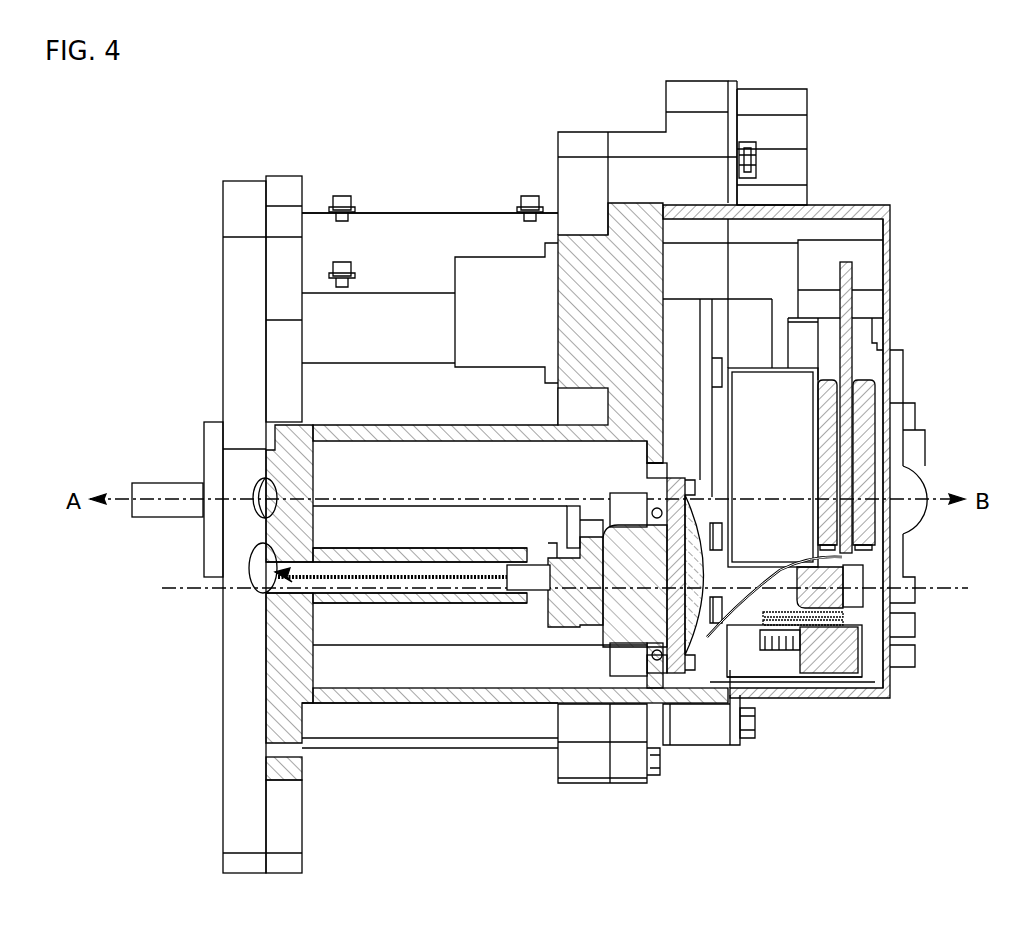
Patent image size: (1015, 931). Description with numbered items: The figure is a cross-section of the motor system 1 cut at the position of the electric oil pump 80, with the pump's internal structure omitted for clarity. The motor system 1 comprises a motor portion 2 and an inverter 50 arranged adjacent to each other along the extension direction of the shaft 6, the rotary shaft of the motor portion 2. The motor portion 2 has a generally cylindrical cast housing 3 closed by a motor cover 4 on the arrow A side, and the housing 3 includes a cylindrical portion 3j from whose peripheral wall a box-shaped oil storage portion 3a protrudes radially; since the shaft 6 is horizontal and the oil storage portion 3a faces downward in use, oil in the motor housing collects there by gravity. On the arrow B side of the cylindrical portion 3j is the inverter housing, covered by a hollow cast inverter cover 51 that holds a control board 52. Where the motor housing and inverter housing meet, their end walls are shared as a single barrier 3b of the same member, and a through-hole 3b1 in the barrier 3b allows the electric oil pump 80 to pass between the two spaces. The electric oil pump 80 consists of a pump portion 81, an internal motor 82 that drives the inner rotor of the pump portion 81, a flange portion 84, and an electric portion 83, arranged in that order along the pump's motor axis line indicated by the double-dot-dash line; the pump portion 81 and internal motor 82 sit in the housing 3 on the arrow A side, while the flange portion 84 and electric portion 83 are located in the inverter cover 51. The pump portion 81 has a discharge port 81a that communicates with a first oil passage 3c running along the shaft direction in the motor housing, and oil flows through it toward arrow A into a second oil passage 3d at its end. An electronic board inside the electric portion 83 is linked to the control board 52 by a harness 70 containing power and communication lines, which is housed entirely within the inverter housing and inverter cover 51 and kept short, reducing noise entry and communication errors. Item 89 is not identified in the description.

The motor system 1 is at (940, 130).
The motor portion 2 is at (664, 70).
The housing 3 is at (378, 212).
The oil storage portion 3a is at (418, 704).
The barrier 3b is at (647, 464).
The through-hole 3b1 is at (603, 530).
The first oil passage 3c is at (395, 568).
The second oil passage 3d is at (280, 563).
The cylindrical portion 3j is at (458, 212).
The motor cover 4 is at (245, 180).
The shaft 6 is at (163, 483).
The inverter 50 is at (890, 70).
The inverter cover 51 is at (838, 205).
The control board 52 is at (852, 278).
The harness 70 is at (745, 650).
The electric oil pump 80 is at (713, 838).
The pump portion 81 is at (578, 640).
The discharge port 81a is at (506, 568).
The internal motor 82 is at (630, 646).
The electric portion 83 is at (703, 662).
The flange portion 84 is at (676, 676).
The fastening screw 89 is at (653, 512).